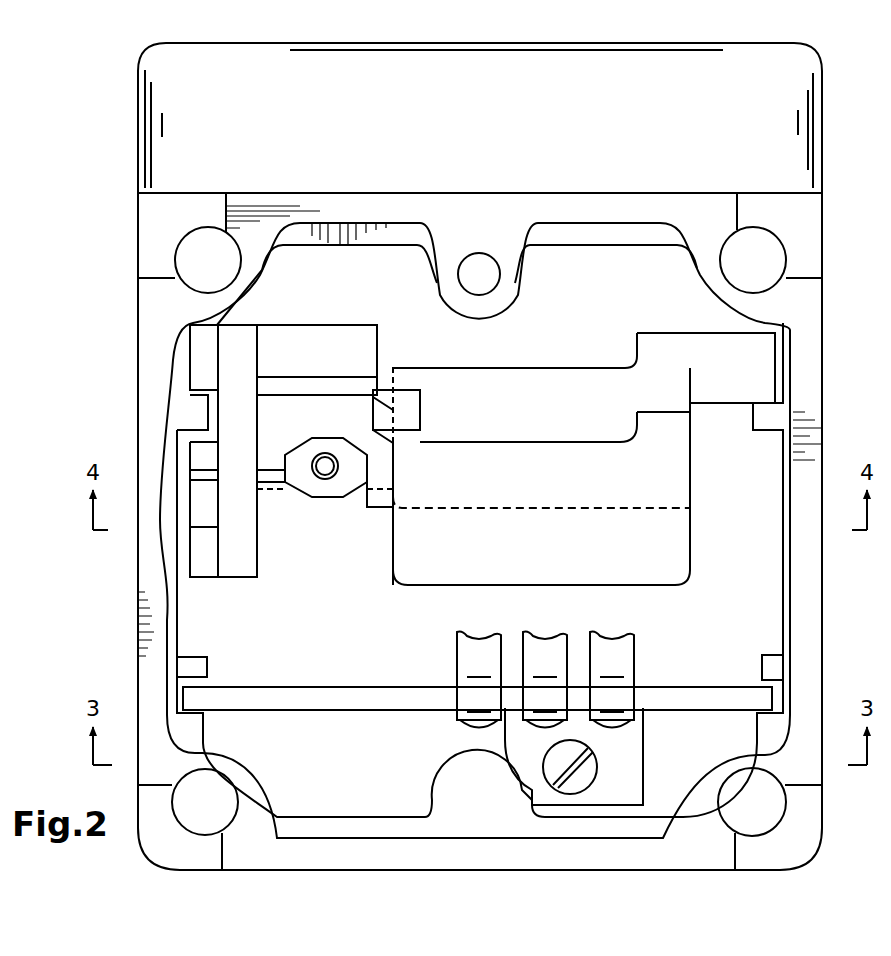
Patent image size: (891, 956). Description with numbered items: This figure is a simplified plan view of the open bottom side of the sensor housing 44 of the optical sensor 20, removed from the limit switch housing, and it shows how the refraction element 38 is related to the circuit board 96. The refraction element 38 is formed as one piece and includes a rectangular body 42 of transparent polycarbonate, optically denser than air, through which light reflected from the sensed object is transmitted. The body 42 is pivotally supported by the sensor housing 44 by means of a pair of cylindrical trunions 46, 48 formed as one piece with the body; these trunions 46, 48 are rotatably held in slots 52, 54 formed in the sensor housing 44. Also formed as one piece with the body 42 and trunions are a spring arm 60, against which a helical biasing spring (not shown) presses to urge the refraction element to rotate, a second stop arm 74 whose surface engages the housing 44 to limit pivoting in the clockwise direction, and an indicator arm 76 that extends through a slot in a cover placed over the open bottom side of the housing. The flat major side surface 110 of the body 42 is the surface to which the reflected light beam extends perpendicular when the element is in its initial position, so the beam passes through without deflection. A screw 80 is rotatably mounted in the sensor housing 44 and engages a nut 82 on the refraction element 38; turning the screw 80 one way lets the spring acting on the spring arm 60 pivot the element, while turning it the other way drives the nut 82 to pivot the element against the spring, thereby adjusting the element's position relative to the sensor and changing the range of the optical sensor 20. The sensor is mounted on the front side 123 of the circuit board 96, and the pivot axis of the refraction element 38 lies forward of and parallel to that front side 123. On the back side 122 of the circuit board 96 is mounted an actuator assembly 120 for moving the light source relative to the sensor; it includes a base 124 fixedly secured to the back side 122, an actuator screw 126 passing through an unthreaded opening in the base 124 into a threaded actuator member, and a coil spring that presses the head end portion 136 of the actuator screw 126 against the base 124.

The optical sensor 20 is at (128, 639).
The refraction element 38 is at (700, 579).
The body of transparent material 42 is at (660, 495).
The sensor housing 44 is at (812, 333).
The trunion 46 is at (748, 325).
The trunion 48 is at (203, 352).
The slot 52 is at (782, 372).
The slot 54 is at (183, 384).
The spring arm 60 is at (241, 578).
The second stop arm 74 is at (385, 455).
The indicator arm 76 is at (407, 412).
The screw 80 is at (325, 470).
The nut 82 is at (345, 483).
The circuit board 96 is at (310, 712).
The flat major side surface 110 is at (566, 408).
The actuator assembly 120 is at (577, 803).
The back side of the circuit board 122 is at (403, 712).
The front side of the circuit board 123 is at (388, 686).
The base 124 is at (630, 790).
The actuator screw 126 is at (593, 788).
The head end portion 136 is at (588, 770).